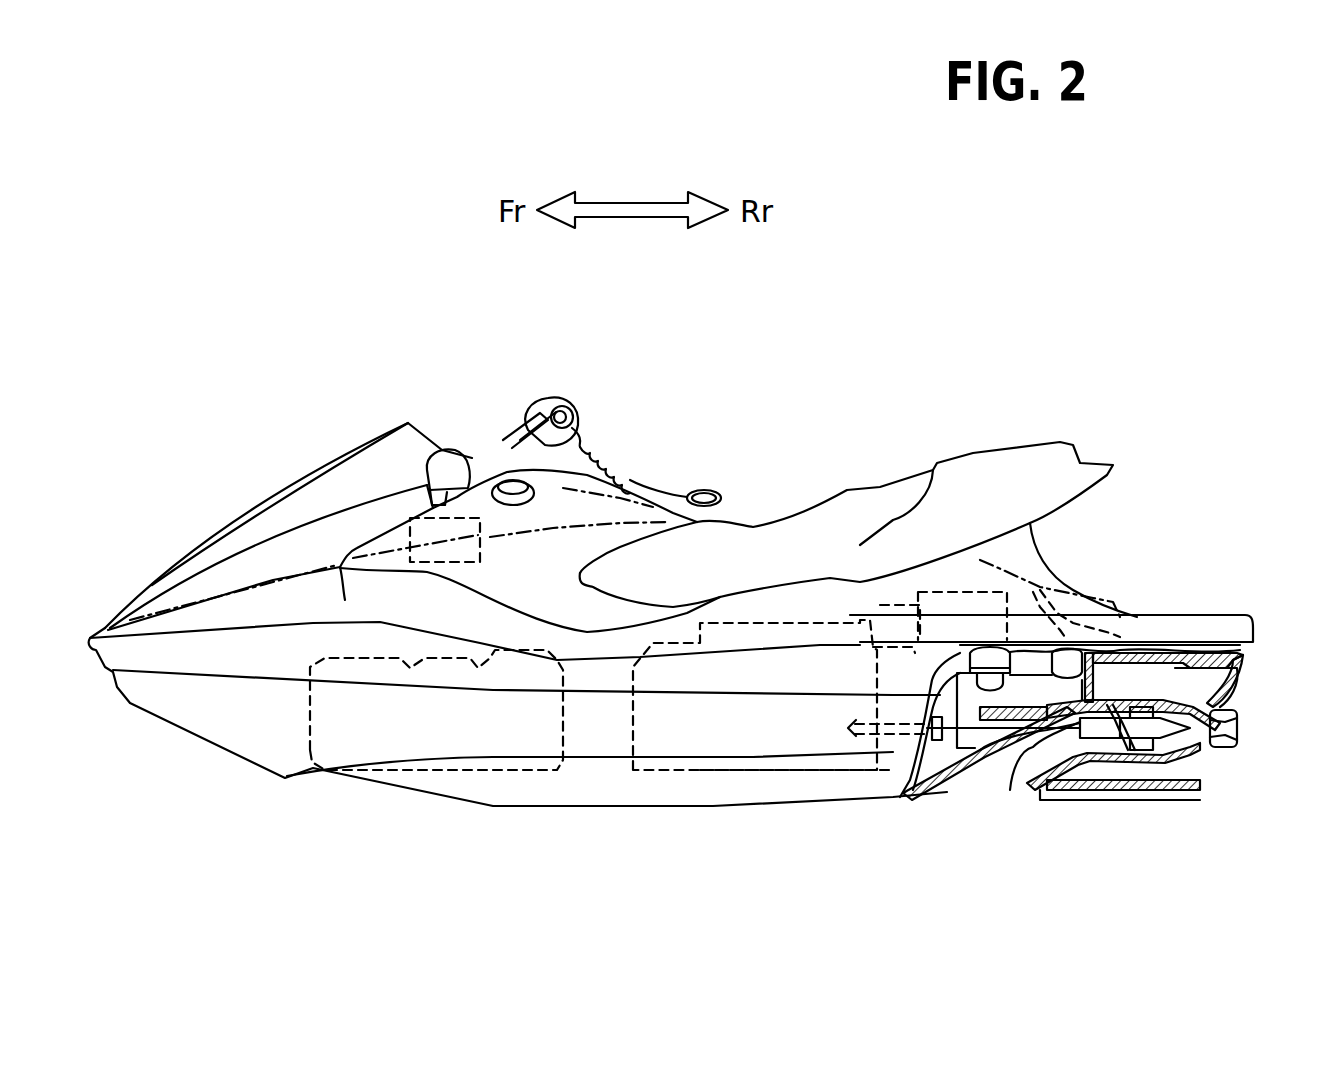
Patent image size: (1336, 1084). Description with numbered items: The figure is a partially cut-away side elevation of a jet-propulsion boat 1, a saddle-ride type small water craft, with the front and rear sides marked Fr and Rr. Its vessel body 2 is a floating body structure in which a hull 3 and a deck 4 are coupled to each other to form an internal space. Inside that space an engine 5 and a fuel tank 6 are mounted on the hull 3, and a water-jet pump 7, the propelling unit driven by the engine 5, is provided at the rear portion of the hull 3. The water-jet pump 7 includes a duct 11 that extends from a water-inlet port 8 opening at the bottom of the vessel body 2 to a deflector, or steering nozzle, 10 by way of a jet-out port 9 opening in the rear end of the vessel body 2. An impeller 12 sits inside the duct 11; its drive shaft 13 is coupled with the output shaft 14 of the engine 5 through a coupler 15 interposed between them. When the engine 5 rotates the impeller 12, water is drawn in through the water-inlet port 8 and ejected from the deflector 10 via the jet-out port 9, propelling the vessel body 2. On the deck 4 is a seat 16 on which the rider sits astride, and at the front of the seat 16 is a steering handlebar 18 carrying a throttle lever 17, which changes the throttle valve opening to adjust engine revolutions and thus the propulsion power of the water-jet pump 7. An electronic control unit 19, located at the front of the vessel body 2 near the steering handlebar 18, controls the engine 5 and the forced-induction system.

The jet-propulsion boat 1 is at (352, 305).
The vessel body 2 is at (224, 708).
The hull 3 is at (873, 815).
The deck 4 is at (275, 598).
The engine 5 is at (740, 763).
The fuel tank 6 is at (405, 748).
The water-jet pump 7 is at (1036, 794).
The water-inlet port 8 is at (960, 787).
The jet-out port 9 is at (1237, 735).
The deflector (steering nozzle) 10 is at (1235, 700).
The duct 11 is at (997, 760).
The impeller 12 is at (1100, 733).
The drive shaft 13 is at (1010, 790).
The output shaft 14 is at (870, 740).
The coupler 15 is at (950, 787).
The seat 16 is at (800, 525).
The throttle lever 17 is at (585, 405).
The steering handlebar 18 is at (530, 405).
The electronic control unit (ECU) 19 is at (412, 538).